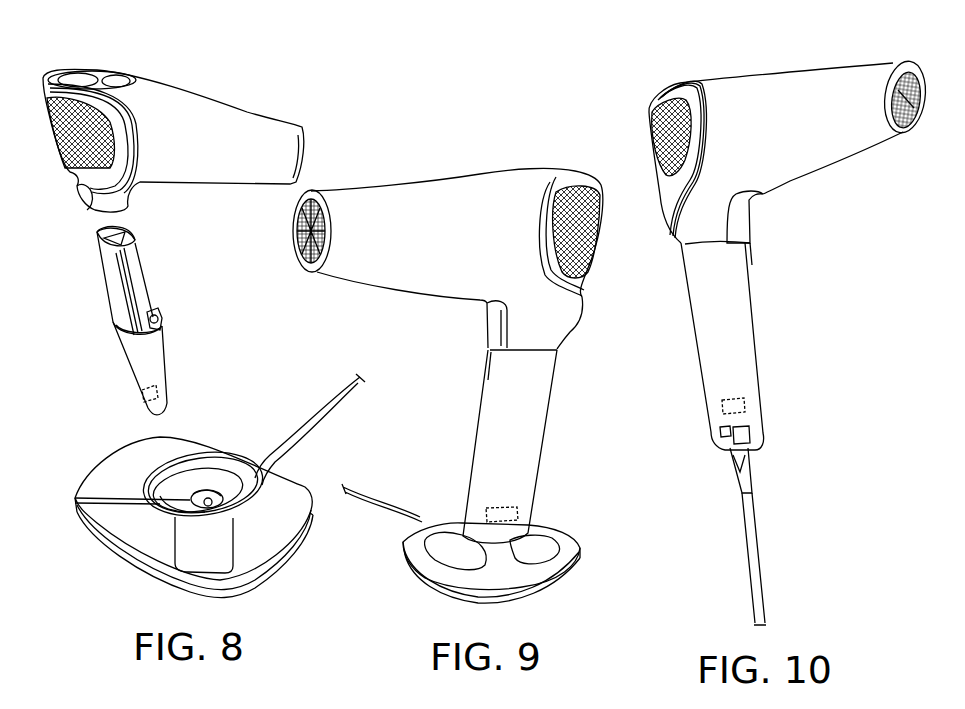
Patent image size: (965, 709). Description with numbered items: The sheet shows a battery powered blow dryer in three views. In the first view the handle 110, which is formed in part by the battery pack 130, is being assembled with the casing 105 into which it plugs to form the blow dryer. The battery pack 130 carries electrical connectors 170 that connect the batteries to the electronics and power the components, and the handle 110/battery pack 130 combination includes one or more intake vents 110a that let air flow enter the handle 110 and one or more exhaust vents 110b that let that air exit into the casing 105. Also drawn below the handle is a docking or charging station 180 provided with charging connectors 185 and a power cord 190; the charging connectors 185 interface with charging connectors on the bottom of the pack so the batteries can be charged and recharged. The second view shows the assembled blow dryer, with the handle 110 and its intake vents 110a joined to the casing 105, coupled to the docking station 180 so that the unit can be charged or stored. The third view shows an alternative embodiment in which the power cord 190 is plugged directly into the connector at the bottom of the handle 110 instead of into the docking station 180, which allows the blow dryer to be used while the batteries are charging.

In FIG. 8, the casing 105 is at (163, 98).
In FIG. 9, the casing 105 is at (478, 170).
In FIG. 10, the casing 105 is at (747, 78).
In FIG. 8, the handle 110 is at (162, 363).
In FIG. 9, the handle 110 is at (537, 467).
In FIG. 10, the handle 110 is at (700, 370).
In FIG. 8, the intake vent 110a is at (140, 389).
In FIG. 9, the intake vent 110a is at (523, 517).
In FIG. 10, the intake vent 110a is at (747, 405).
In FIG. 8, the exhaust vent 110b is at (138, 252).
In FIG. 8, the battery pack 130 is at (108, 285).
In FIG. 10, the battery pack 130 is at (757, 533).
In FIG. 8, the electrical connector 170 is at (152, 318).
In FIG. 8, the docking station 180 is at (277, 570).
In FIG. 9, the docking station 180 is at (575, 577).
In FIG. 8, the charging connector 185 is at (203, 493).
In FIG. 8, the power cord 190 is at (323, 420).